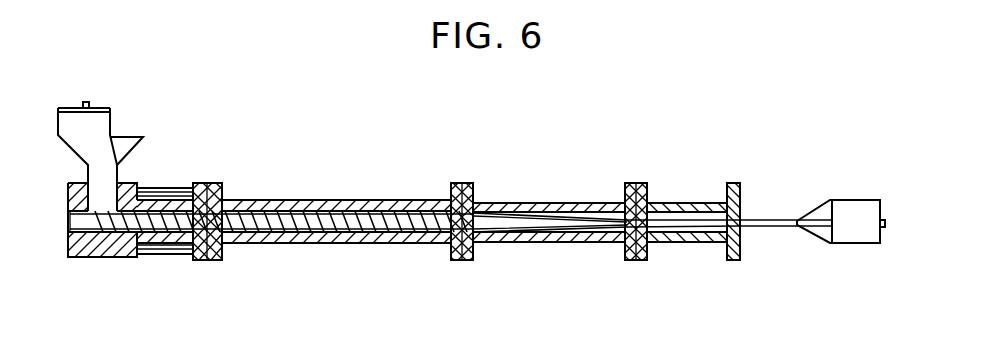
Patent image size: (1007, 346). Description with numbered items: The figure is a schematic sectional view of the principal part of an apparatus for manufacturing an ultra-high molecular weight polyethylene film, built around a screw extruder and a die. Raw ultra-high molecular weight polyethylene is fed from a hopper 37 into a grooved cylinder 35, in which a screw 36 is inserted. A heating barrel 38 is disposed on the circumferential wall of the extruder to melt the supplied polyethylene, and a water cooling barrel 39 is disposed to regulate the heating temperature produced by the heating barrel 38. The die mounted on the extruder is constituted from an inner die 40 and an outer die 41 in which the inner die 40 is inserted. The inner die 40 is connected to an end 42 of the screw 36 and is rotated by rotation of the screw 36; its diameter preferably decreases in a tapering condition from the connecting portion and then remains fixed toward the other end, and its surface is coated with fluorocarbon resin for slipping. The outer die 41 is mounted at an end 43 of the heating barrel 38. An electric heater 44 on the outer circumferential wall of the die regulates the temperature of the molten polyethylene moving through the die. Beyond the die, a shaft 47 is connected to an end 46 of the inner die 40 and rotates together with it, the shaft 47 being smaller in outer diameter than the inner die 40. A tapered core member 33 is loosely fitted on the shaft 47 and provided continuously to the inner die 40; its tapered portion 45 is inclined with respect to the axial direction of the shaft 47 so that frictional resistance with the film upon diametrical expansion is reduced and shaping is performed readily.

The tapered core member 33 is at (840, 172).
The grooved cylinder 35 is at (118, 258).
The screw 36 is at (332, 222).
The hopper 37 is at (125, 143).
The heating barrel 38 is at (277, 200).
The water cooling barrel 39 is at (163, 190).
The inner die 40 is at (586, 204).
The outer die 41 is at (550, 204).
The end of the screw 42 is at (476, 205).
The end of the heating barrel 43 is at (456, 183).
The electric heater 44 is at (612, 204).
The tapered portion 45 is at (820, 236).
The end of the inner die 46 is at (756, 227).
The shaft 47 is at (776, 220).